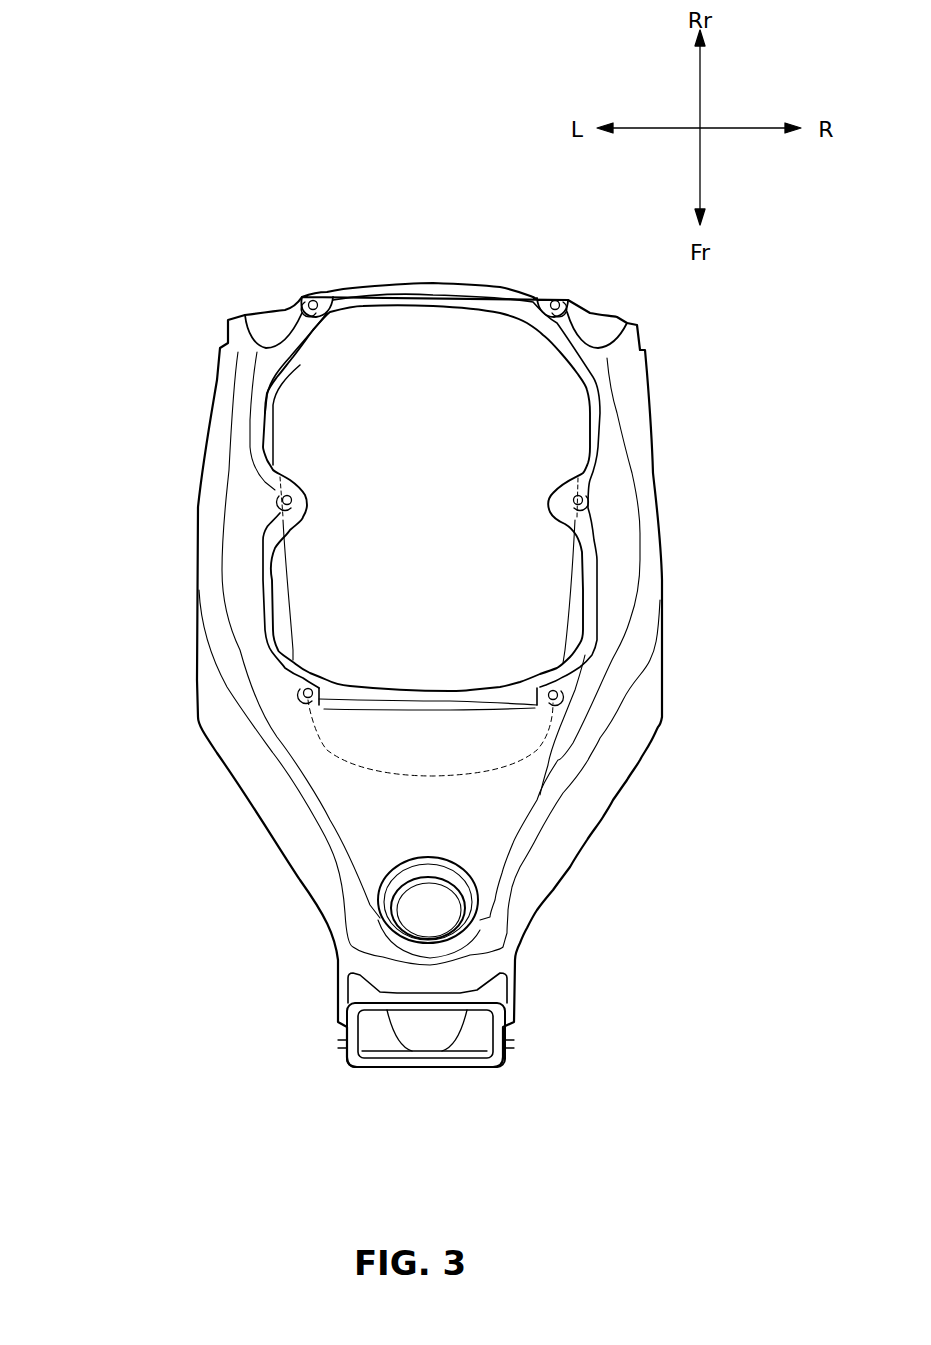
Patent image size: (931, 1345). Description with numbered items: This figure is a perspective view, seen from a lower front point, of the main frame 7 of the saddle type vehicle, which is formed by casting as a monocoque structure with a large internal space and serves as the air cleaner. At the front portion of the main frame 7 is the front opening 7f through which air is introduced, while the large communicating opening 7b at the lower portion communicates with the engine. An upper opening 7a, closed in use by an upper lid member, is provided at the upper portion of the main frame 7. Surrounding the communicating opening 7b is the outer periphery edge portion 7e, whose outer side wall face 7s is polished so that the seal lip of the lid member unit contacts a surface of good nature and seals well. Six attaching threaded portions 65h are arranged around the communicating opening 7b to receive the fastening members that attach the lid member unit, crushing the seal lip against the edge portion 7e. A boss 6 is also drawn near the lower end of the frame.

The main frame 7 is at (168, 496).
The upper opening 7a is at (288, 588).
The communicating opening 7b is at (272, 571).
The outer periphery edge portion 7e is at (603, 390).
The outer side wall face 7s is at (595, 555).
The front opening 7f is at (483, 1053).
The pivot boss 6 is at (462, 948).
The attaching threaded portions 65h is at (312, 300).